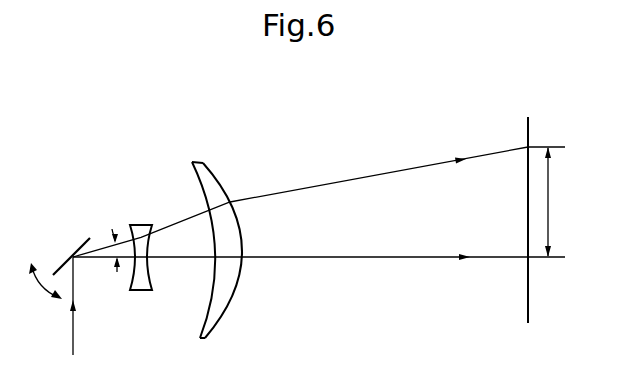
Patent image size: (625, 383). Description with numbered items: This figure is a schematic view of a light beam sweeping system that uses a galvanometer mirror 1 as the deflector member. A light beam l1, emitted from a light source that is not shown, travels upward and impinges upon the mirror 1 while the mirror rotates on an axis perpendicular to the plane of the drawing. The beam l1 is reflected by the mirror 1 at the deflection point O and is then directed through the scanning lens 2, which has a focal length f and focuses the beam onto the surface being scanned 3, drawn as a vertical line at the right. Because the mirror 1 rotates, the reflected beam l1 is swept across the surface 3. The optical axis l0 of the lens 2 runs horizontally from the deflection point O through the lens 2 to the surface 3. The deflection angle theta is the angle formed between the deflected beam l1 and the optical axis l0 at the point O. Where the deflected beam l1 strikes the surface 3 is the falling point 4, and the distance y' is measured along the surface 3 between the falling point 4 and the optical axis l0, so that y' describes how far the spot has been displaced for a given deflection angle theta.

The galvanometer mirror 1 is at (83, 243).
The scanning lens 2 is at (225, 152).
The surface being scanned 3 is at (528, 307).
The falling point 4 is at (528, 147).
The deflection point O is at (75, 258).
The deflection angle theta is at (114, 241).
The light beam l1 is at (302, 188).
The optical axis l0 is at (365, 258).
The distance y' is at (557, 202).